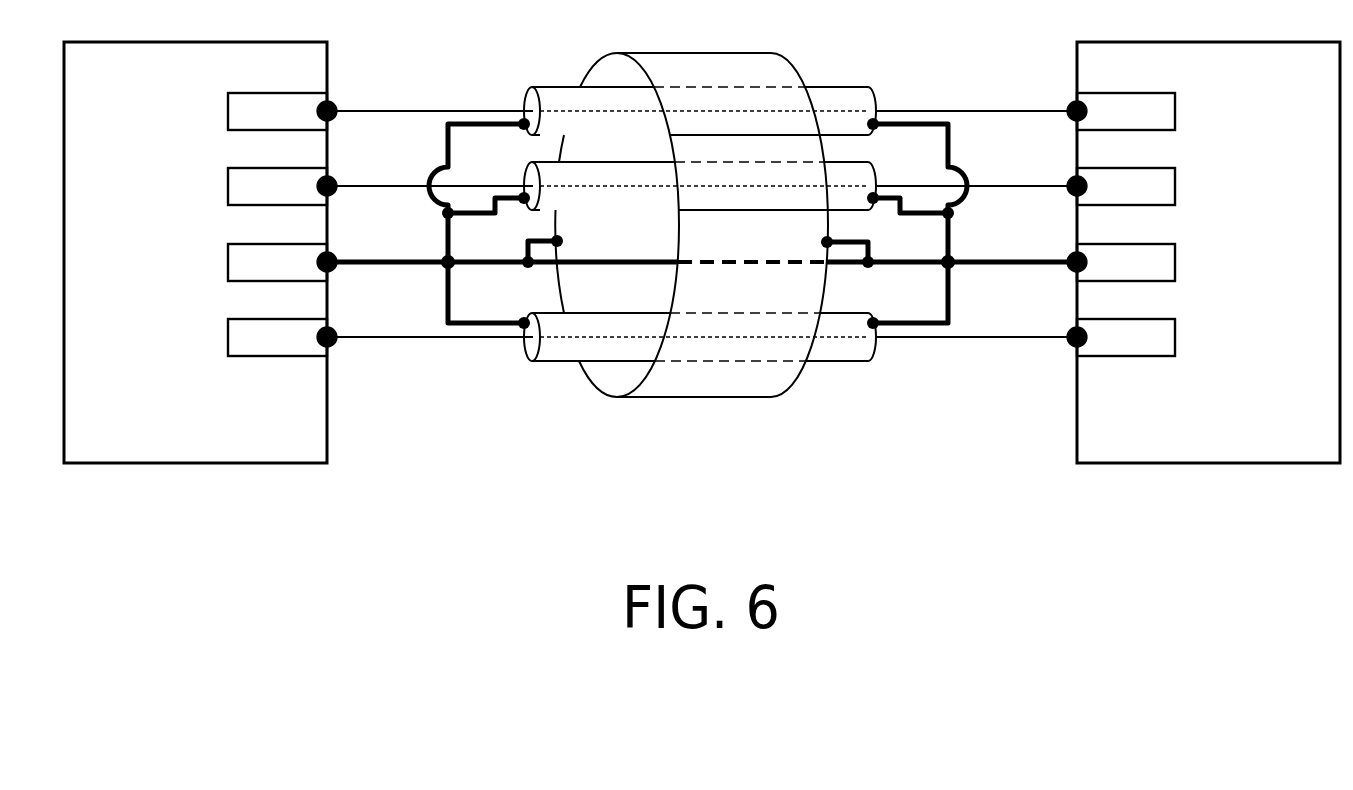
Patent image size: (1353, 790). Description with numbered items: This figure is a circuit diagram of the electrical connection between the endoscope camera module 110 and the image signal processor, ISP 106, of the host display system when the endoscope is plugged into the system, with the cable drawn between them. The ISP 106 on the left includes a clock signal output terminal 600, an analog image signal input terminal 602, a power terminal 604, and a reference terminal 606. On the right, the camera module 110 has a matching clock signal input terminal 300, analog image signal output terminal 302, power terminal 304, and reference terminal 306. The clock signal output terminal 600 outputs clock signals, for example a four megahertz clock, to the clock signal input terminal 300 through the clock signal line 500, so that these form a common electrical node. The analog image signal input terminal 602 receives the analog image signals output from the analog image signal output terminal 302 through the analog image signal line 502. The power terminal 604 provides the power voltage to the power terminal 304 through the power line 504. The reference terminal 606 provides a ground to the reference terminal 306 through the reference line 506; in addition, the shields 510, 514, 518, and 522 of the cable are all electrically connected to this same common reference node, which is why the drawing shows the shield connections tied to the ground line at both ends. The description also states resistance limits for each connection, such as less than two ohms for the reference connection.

The image signal processor (ISP) 106 is at (135, 451).
The camera module 110 is at (1227, 452).
The clock signal output terminal 600 is at (247, 331).
The analog image signal input terminal 602 is at (247, 105).
The power terminal 604 is at (247, 180).
The reference terminal 606 is at (247, 256).
The clock signal input terminal 300 is at (1177, 332).
The analog image signal output terminal 302 is at (1177, 106).
The power terminal 304 is at (1177, 181).
The reference terminal 306 is at (1177, 257).
The clock signal line 500 is at (392, 340).
The analog image signal line 502 is at (1003, 115).
The power line 504 is at (385, 190).
The reference line 506 is at (1007, 267).
The shield 510 is at (847, 348).
The shield 514 is at (843, 98).
The shield 518 is at (620, 198).
The shield 522 is at (685, 387).